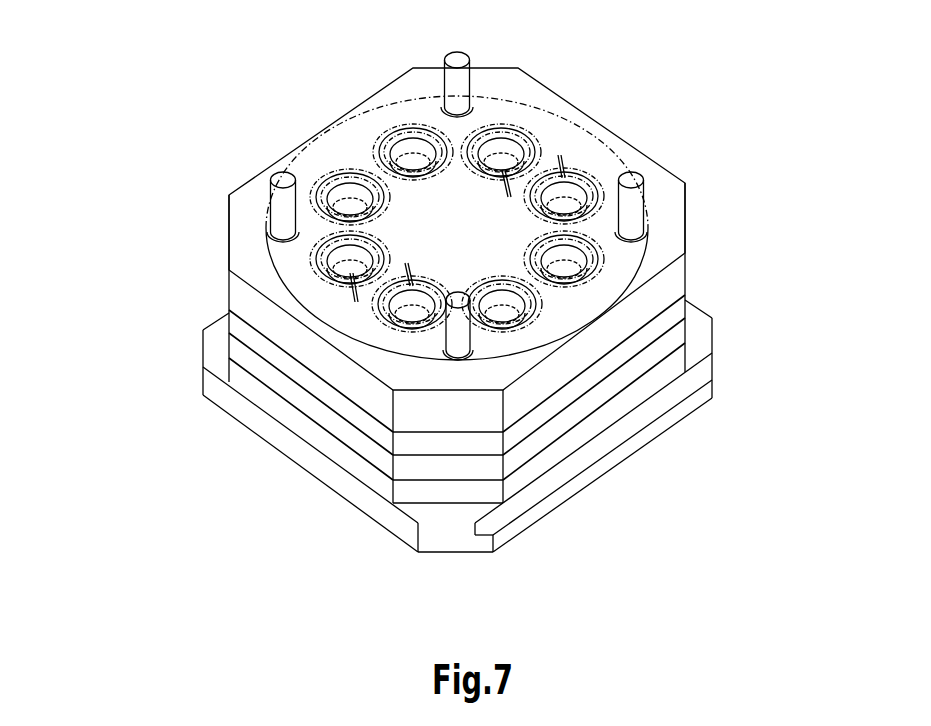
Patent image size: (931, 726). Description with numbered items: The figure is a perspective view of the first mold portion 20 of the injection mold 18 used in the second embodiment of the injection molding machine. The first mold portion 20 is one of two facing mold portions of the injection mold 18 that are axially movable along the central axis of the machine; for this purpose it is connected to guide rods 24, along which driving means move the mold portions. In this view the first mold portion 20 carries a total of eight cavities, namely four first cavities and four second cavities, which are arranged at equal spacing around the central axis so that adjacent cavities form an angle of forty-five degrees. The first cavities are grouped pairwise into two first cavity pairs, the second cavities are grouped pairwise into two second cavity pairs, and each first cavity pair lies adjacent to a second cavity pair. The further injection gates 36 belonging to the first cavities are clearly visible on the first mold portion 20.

The injection mold 18 is at (248, 213).
The first mold portion 20 is at (457, 426).
The guide rods 24 is at (458, 62).
The further injection gates 36 is at (333, 256).